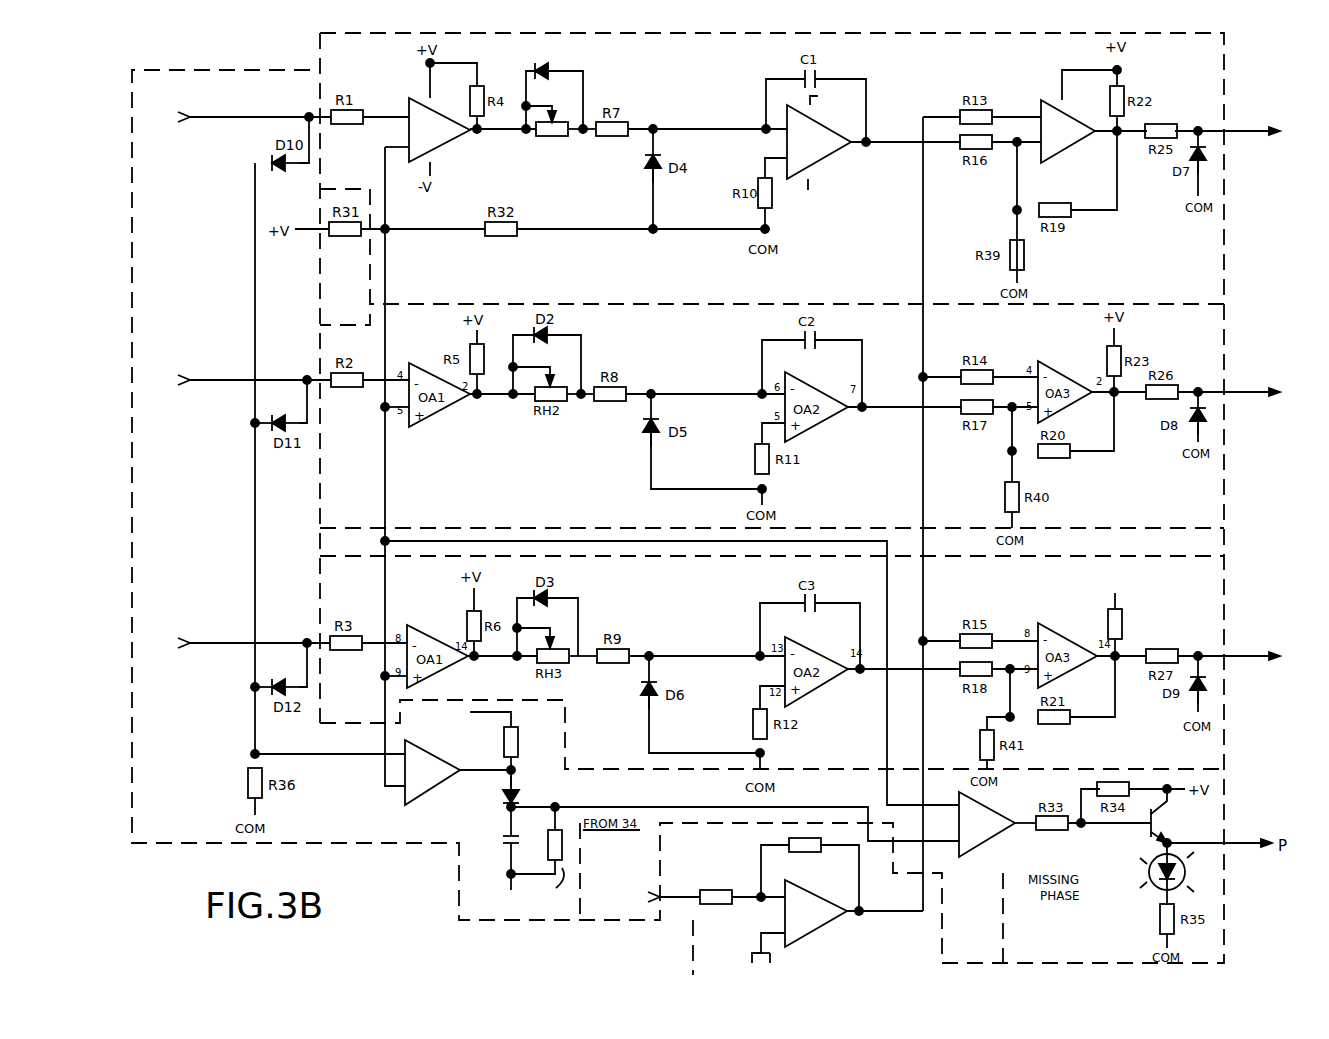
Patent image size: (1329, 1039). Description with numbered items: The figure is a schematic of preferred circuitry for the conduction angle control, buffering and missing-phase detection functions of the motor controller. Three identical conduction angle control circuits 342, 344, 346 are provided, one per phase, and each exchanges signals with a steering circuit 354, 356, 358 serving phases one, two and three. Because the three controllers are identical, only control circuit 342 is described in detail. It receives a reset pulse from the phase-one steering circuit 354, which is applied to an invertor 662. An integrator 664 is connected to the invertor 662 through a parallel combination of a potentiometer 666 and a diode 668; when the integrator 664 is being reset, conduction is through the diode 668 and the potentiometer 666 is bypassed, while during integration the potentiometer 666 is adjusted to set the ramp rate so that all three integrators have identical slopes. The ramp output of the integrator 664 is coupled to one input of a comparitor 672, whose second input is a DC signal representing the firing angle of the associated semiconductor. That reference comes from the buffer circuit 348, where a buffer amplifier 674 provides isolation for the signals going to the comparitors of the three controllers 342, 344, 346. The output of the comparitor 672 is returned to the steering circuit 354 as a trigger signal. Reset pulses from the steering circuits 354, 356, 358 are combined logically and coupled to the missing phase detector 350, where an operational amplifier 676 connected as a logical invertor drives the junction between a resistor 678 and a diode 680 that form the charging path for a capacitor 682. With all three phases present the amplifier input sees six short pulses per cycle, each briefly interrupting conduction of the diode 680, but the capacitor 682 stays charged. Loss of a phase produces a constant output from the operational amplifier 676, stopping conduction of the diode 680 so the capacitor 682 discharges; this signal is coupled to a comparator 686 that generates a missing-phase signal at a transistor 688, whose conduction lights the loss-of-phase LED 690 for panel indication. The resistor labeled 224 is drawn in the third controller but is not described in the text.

The conduction angle control circuit 342 is at (1190, 27).
The conduction angle control circuit 344 is at (772, 423).
The conduction angle control circuit 346 is at (772, 662).
The buffer circuit 348 is at (967, 935).
The missing phase detector 350 is at (1218, 806).
The steering circuit 354 is at (726, 131).
The steering circuit 356 is at (726, 395).
The steering circuit 358 is at (724, 659).
The invertor 662 is at (445, 140).
The integrator 664 is at (826, 160).
The potentiometer 666 is at (528, 140).
The diode 668 is at (560, 72).
The comparitor 672 is at (1048, 97).
The buffer amplifier 674 is at (830, 926).
The operational amplifier 676 is at (428, 796).
The resistor 678 is at (493, 737).
The diode 680 is at (498, 788).
The capacitor 682 is at (517, 858).
The comparator 686 is at (988, 840).
The transistor 688 is at (1150, 865).
The LED 690 is at (1149, 879).
The resistor (R24) 224 is at (1127, 615).